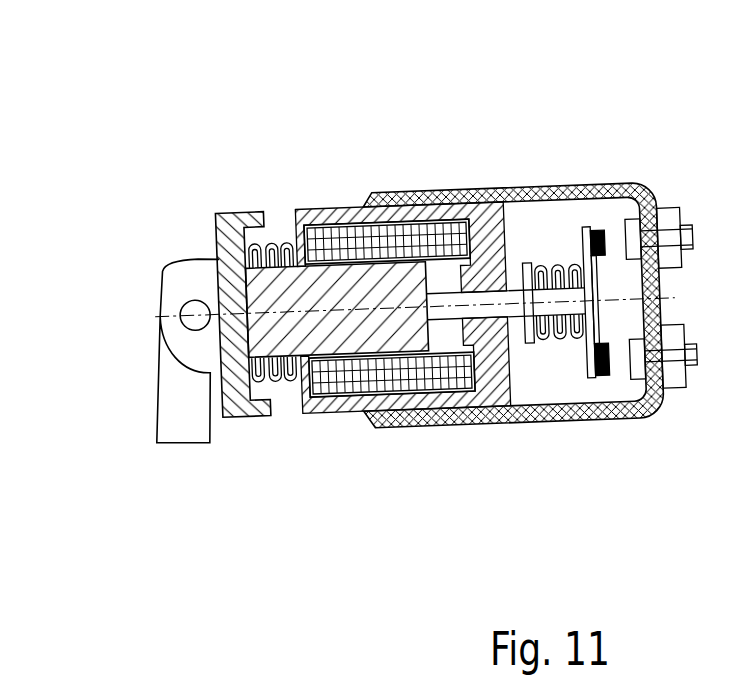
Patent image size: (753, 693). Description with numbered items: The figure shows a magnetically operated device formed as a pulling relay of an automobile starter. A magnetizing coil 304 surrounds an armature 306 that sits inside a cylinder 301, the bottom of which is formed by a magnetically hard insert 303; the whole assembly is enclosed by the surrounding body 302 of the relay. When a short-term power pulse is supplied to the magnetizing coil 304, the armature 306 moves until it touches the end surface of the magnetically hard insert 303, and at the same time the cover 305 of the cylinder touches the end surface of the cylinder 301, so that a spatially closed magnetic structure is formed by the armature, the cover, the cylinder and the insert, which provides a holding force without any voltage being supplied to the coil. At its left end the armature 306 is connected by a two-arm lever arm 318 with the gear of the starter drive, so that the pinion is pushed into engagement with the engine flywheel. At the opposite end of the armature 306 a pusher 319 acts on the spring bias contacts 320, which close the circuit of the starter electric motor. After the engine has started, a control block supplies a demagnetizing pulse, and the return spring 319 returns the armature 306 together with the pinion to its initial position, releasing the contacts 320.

The cylinder 301 is at (336, 235).
The magnetic housing / yoke 302 is at (496, 388).
The magnetically hard insert 303 is at (535, 184).
The magnetizing coil 304 is at (345, 367).
The cover 305 is at (233, 248).
The armature 306 is at (292, 298).
The two-arm lever arm 318 is at (177, 415).
The return spring / pusher 319 is at (559, 262).
The spring bias contacts 320 is at (590, 369).